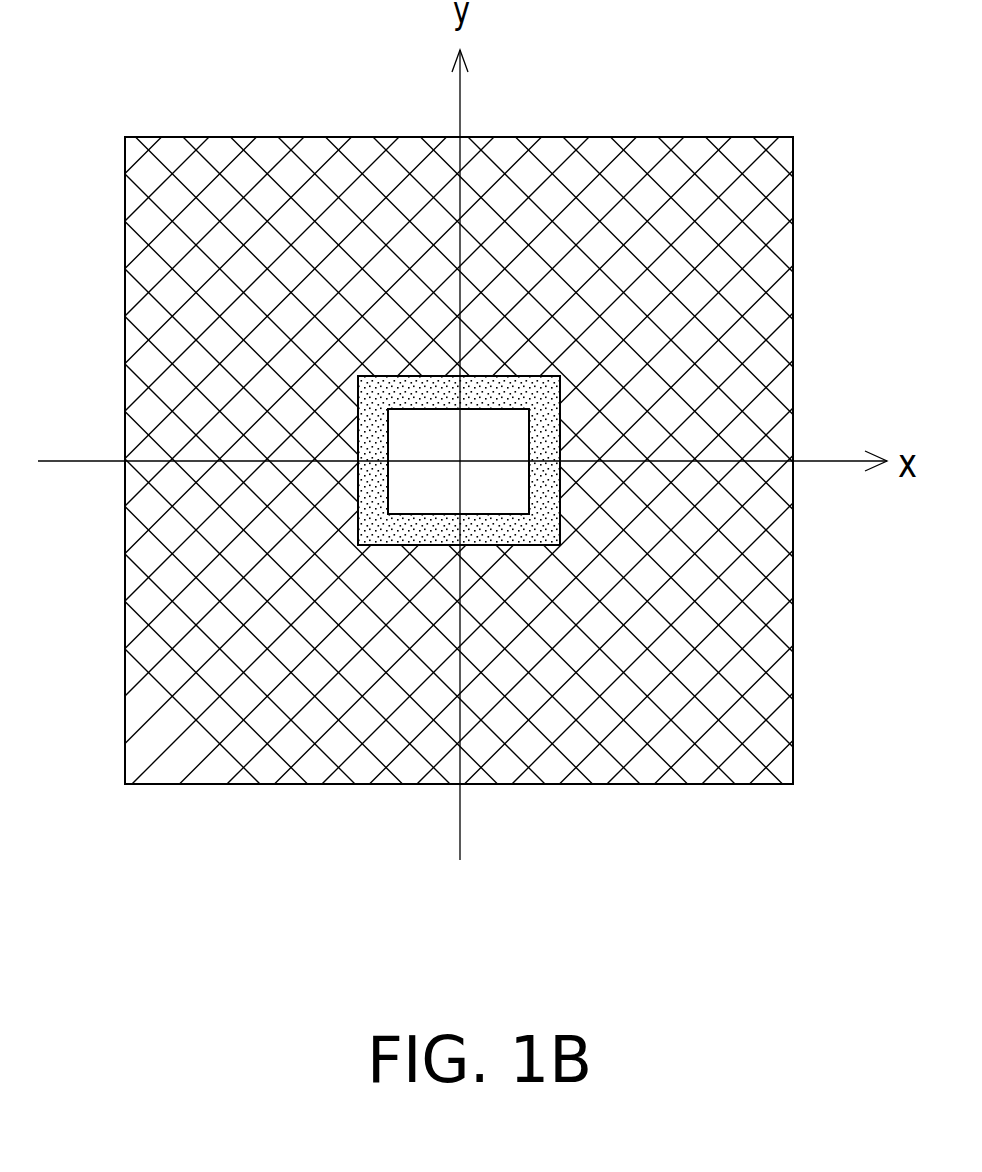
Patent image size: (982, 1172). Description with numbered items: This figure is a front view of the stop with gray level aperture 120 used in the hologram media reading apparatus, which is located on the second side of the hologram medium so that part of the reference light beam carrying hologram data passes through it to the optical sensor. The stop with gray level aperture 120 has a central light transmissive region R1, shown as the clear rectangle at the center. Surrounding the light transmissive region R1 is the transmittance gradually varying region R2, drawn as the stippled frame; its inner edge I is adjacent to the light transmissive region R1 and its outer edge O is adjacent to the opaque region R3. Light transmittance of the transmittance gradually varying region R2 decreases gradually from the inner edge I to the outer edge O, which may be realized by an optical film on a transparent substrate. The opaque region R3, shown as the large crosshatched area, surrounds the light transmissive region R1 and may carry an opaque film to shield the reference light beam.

The stop with gray level aperture 120 is at (491, 484).
The light transmissive region R1 is at (510, 468).
The transmittance gradually varying region R2 is at (542, 475).
The opaque region R3 is at (647, 252).
The inner edge I is at (530, 498).
The outer edge O is at (560, 480).